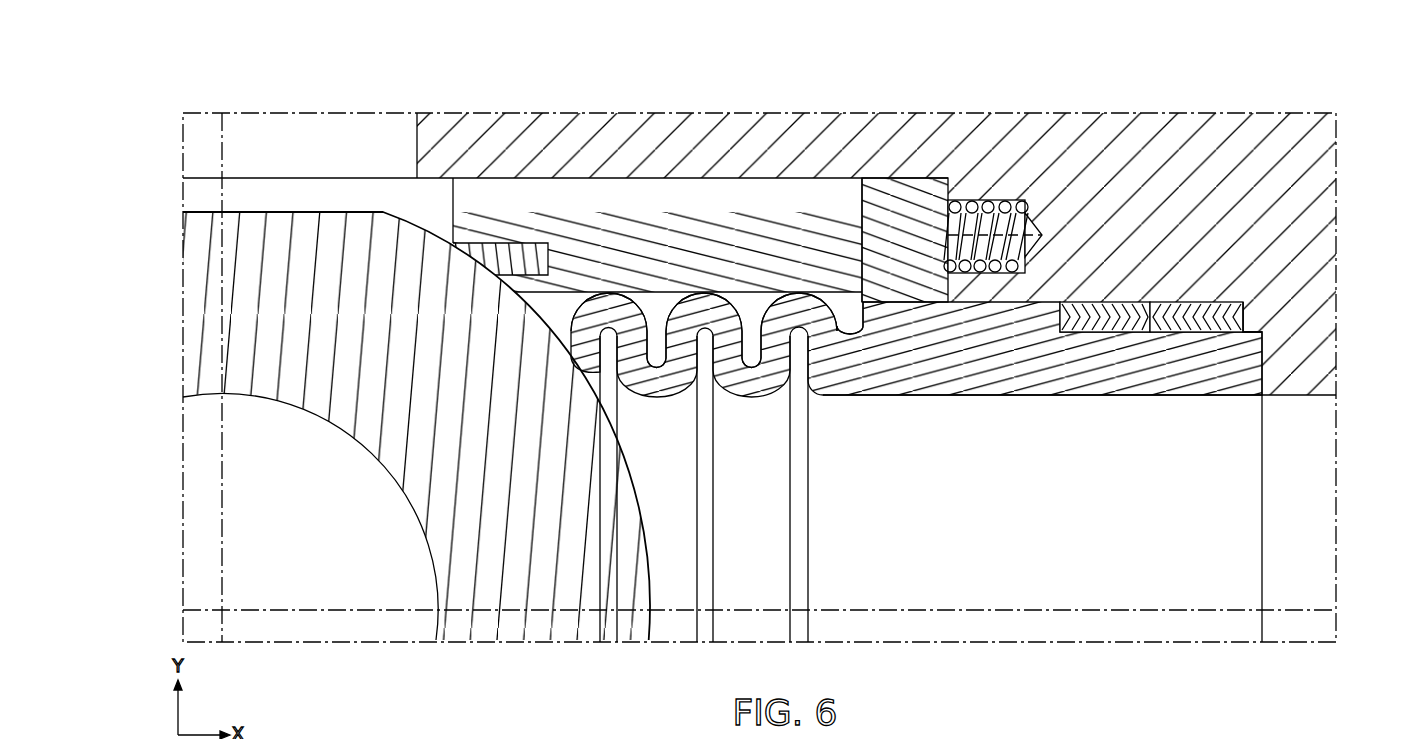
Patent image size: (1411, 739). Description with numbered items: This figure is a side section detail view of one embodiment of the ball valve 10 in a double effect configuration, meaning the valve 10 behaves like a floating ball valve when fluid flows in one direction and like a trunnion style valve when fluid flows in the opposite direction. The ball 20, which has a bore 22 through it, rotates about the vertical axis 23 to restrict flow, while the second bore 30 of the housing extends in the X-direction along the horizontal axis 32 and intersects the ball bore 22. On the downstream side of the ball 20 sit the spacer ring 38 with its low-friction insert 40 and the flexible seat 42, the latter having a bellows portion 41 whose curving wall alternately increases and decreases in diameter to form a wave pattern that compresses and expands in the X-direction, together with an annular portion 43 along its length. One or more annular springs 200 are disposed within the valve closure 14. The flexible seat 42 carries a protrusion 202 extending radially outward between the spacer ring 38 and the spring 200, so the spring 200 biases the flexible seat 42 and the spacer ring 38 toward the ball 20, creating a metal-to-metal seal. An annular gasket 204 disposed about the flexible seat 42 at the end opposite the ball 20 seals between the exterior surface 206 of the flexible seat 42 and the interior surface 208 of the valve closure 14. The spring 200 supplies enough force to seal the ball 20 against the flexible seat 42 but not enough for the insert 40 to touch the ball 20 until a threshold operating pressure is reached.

The ball valve 10 is at (1150, 75).
The valve closure 14 is at (1292, 130).
The ball 20 is at (620, 515).
The bore 22 is at (302, 551).
The vertical axis 23 is at (222, 510).
The second bore 30 is at (1084, 564).
The horizontal axis 32 is at (900, 610).
The spacer ring 38 is at (680, 190).
The low-friction insert 40 is at (510, 252).
The bellows portion 41 is at (670, 395).
The flexible seat 42 is at (890, 378).
The annular portion 43 is at (1050, 395).
The annular spring 200 is at (1012, 200).
The protrusion 202 is at (905, 195).
The annular gasket 204 is at (1195, 325).
The exterior surface 206 is at (1215, 325).
The interior surface 208 is at (1197, 300).